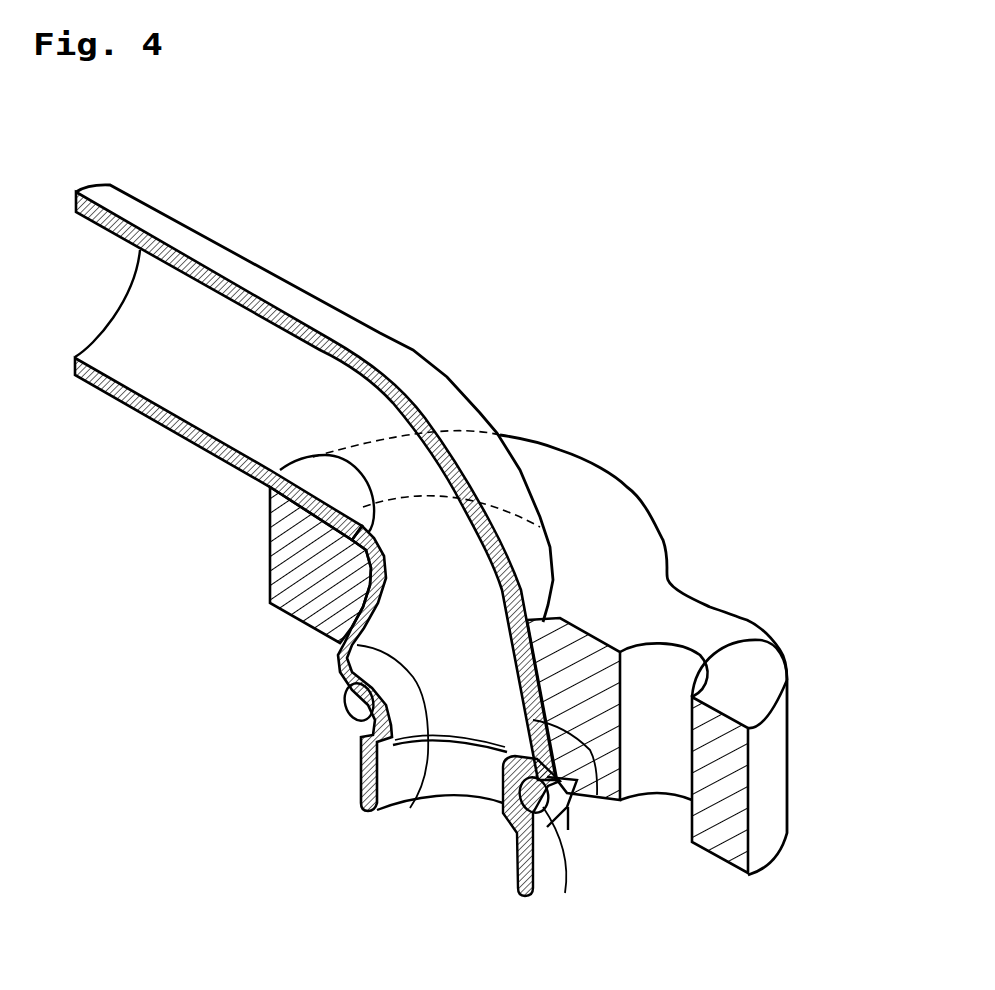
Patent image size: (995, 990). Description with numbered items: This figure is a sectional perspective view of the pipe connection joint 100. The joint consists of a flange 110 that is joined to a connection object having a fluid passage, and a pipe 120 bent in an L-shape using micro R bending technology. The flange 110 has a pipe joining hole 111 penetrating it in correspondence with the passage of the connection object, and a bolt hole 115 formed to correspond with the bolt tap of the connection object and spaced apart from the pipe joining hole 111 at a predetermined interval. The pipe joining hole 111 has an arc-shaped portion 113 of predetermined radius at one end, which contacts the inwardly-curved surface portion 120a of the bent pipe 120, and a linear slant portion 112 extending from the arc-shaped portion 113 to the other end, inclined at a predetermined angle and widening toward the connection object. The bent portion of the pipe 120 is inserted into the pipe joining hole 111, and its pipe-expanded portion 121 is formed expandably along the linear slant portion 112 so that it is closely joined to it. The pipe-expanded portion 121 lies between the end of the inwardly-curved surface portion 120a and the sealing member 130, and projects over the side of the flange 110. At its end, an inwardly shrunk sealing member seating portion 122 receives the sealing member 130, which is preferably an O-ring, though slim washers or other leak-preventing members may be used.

The pipe connection joint 100 is at (676, 336).
The flange 110 is at (660, 517).
The pipe joining hole 111 is at (187, 545).
The linear slant portion 112 is at (337, 597).
The arc-shaped portion 113 is at (366, 545).
The bolt hole 115 is at (773, 640).
The pipe 120 is at (294, 264).
The inwardly-curved surface portion 120a is at (267, 485).
The pipe-expanded portion 121 is at (440, 753).
The sealing member seating portion 122 is at (358, 710).
The sealing member 130 is at (543, 812).